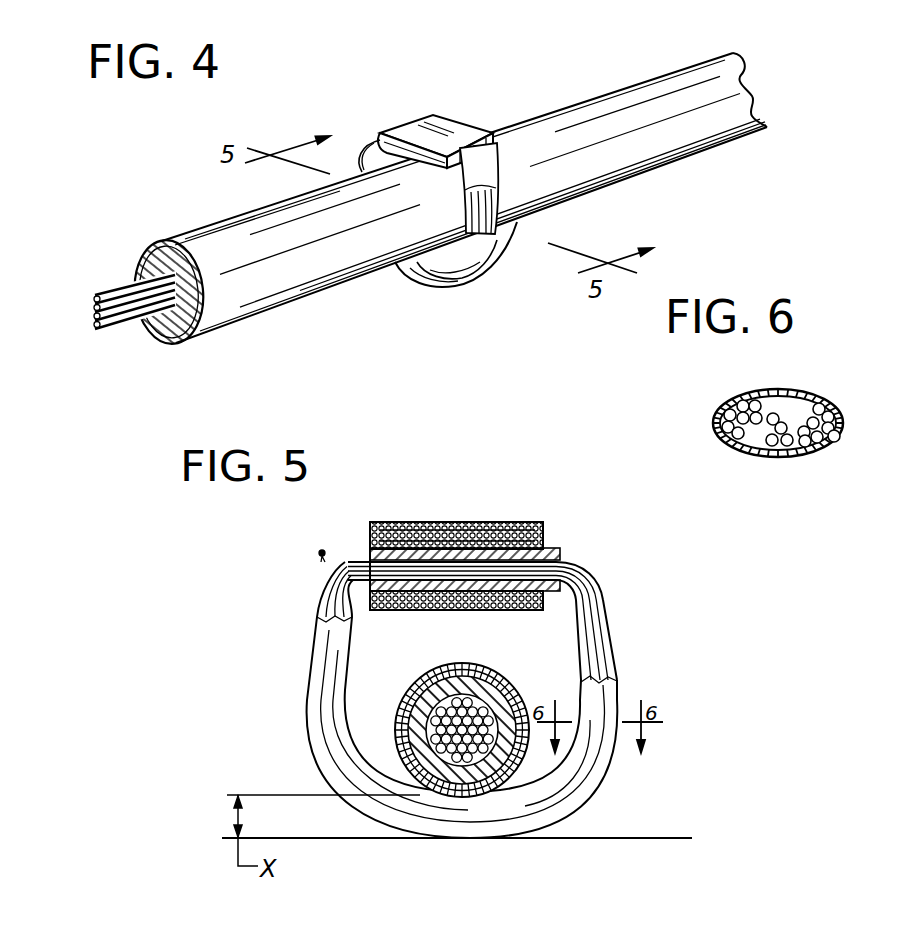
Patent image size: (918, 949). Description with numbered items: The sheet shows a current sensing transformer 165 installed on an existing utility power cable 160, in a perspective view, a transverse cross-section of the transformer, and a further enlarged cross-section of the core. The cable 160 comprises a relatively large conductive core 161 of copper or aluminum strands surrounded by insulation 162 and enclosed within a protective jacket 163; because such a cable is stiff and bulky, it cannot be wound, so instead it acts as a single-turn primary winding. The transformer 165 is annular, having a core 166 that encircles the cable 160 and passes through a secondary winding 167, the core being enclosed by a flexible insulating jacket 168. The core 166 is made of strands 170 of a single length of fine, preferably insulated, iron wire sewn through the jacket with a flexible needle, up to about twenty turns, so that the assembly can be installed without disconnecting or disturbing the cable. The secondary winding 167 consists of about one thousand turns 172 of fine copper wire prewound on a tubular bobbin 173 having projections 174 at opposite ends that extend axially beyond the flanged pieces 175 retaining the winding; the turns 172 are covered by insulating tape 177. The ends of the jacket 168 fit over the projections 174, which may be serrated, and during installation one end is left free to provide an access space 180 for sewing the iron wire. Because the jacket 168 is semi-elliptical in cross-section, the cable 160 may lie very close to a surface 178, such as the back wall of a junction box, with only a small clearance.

In FIG. 4, the cable 160 is at (603, 97).
In FIG. 5, the cable 160 is at (462, 665).
In FIG. 4, the conductive core 161 is at (110, 292).
In FIG. 5, the conductive core 161 is at (440, 706).
In FIG. 4, the insulation 162 is at (146, 256).
In FIG. 5, the insulation 162 is at (507, 692).
In FIG. 4, the protective jacket 163 is at (200, 228).
In FIG. 4, the transformer 165 is at (398, 122).
In FIG. 5, the transformer 165 is at (535, 492).
In FIG. 4, the core 166 is at (500, 212).
In FIG. 6, the core 166 is at (742, 448).
In FIG. 5, the core 166 is at (610, 628).
In FIG. 4, the secondary winding 167 is at (462, 124).
In FIG. 5, the secondary winding 167 is at (420, 535).
In FIG. 4, the insulating jacket 168 is at (478, 268).
In FIG. 6, the insulating jacket 168 is at (752, 396).
In FIG. 5, the insulating jacket 168 is at (615, 658).
In FIG. 6, the strands of iron core wire 170 is at (780, 420).
In FIG. 5, the turns 172 is at (448, 535).
In FIG. 5, the bobbin 173 is at (480, 535).
In FIG. 5, the projections 174 is at (556, 561).
In FIG. 5, the flanged pieces 175 is at (558, 548).
In FIG. 5, the insulating tape 177 is at (388, 521).
In FIG. 5, the surface 178 is at (668, 838).
In FIG. 5, the access space 180 is at (320, 553).